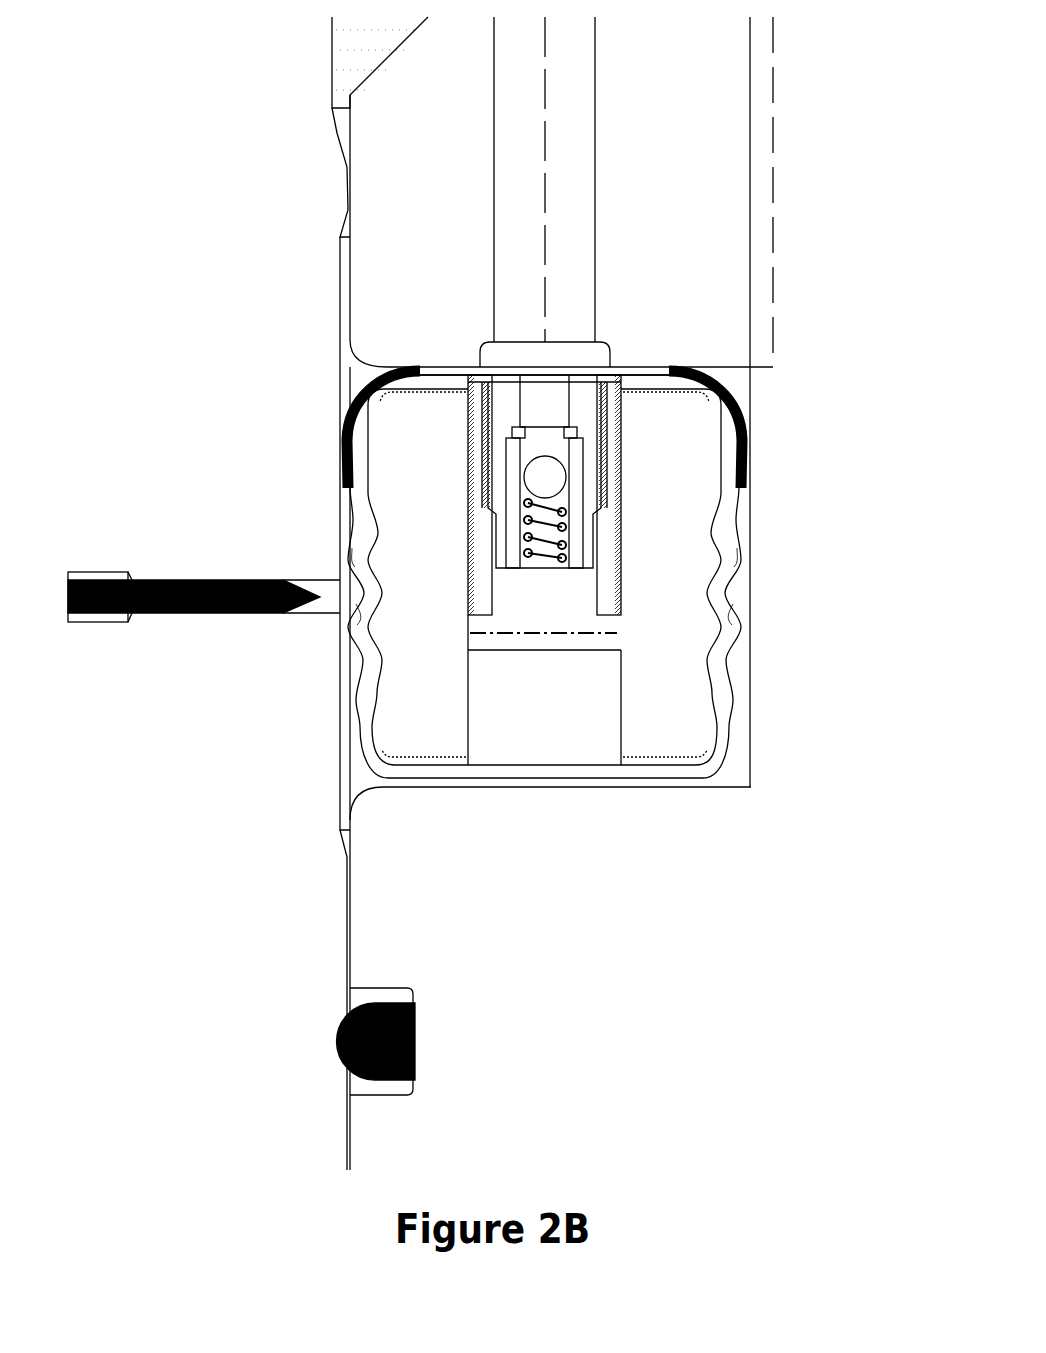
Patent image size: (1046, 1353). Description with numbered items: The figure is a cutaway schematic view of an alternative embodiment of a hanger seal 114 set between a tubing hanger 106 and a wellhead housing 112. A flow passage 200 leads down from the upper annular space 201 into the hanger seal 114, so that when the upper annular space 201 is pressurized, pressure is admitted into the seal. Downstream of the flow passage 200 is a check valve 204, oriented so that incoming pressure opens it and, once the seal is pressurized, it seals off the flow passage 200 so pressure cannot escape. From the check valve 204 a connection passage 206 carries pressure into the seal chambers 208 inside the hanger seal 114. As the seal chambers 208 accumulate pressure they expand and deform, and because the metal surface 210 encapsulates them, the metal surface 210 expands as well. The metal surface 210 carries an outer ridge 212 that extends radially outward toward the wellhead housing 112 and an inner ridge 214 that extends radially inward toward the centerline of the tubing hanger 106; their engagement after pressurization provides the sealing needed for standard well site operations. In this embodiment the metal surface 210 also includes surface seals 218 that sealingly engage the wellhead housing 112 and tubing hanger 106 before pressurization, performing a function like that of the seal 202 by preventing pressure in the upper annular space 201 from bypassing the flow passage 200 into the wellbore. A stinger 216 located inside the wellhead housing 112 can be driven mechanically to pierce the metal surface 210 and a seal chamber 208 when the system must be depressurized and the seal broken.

The tubing hanger 106 is at (660, 943).
The wellhead housing 112 is at (245, 290).
The hanger seal 114 is at (575, 420).
The flow passage 200 is at (538, 158).
The upper annular space 201 is at (360, 45).
The seal 202 is at (337, 1038).
The check valve 204 is at (515, 497).
The connection passage 206 is at (582, 643).
The seal chambers 208 is at (640, 745).
The metal surface 210 is at (358, 727).
The outer ridge 212 is at (352, 643).
The inner ridge 214 is at (737, 627).
The stinger 216 is at (200, 580).
The surface seals 218 is at (738, 406).